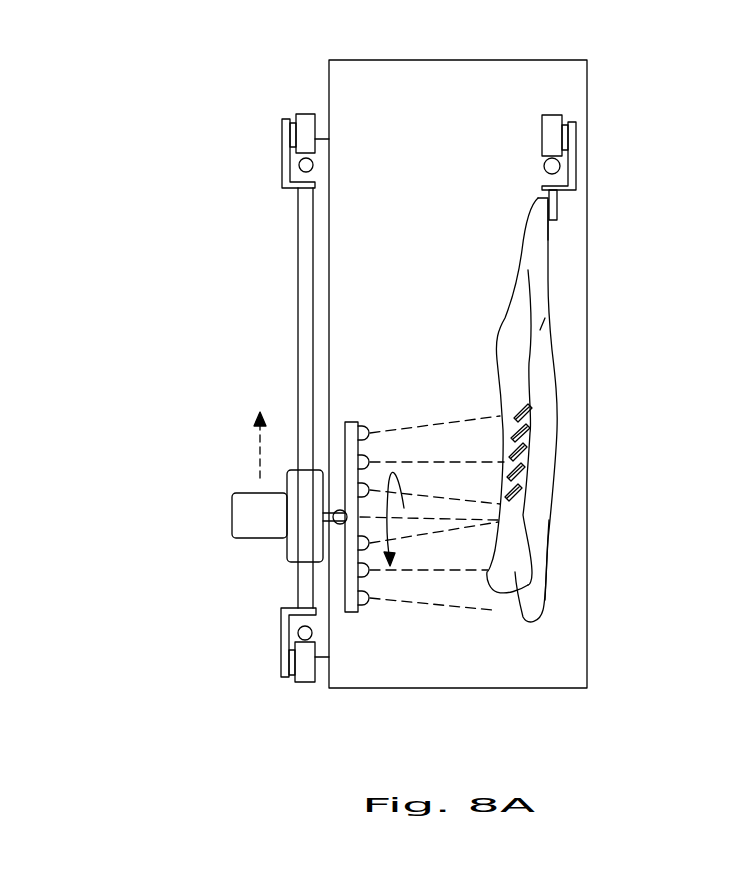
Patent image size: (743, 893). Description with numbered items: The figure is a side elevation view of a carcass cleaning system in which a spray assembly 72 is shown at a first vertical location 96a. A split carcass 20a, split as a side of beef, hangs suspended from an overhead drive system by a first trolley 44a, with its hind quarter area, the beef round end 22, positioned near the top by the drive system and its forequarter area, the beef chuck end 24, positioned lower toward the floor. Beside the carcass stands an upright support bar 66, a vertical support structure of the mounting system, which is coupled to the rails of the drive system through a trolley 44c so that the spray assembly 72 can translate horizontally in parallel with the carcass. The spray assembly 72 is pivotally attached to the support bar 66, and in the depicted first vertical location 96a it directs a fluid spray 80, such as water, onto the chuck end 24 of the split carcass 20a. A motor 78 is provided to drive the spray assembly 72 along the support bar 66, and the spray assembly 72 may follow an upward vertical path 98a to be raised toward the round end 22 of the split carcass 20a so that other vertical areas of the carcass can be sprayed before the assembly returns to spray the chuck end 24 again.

The split carcass 20a is at (556, 285).
The beef round end 22 is at (560, 245).
The beef chuck end 24 is at (549, 540).
The first trolley 44a is at (587, 138).
The trolley 44c is at (266, 116).
The upright support bar 66 is at (297, 215).
The spray assembly 72 is at (213, 512).
The motor 78 is at (248, 493).
The fluid spray 80 is at (427, 420).
The first vertical location 96a is at (218, 556).
The upward vertical path 98a is at (258, 456).